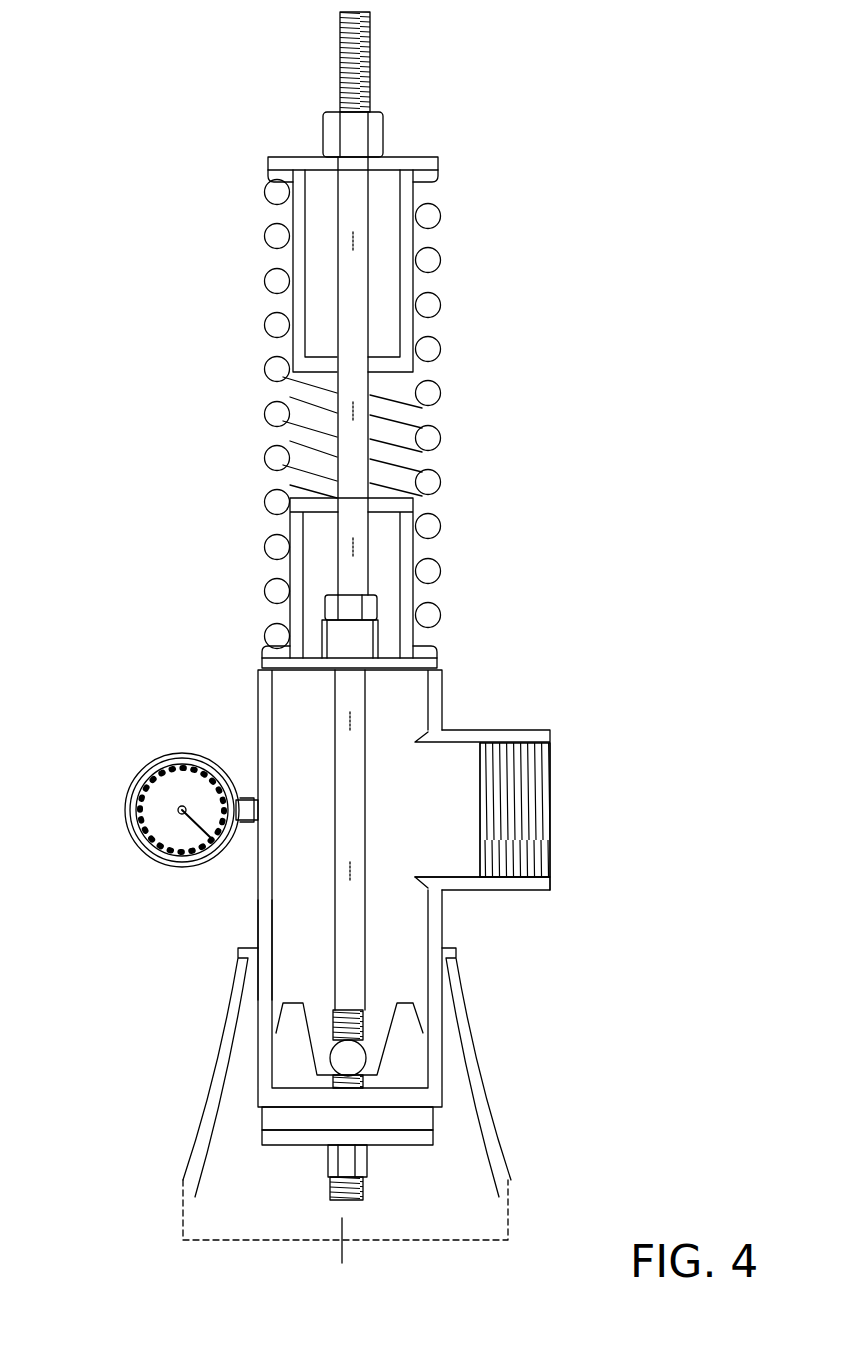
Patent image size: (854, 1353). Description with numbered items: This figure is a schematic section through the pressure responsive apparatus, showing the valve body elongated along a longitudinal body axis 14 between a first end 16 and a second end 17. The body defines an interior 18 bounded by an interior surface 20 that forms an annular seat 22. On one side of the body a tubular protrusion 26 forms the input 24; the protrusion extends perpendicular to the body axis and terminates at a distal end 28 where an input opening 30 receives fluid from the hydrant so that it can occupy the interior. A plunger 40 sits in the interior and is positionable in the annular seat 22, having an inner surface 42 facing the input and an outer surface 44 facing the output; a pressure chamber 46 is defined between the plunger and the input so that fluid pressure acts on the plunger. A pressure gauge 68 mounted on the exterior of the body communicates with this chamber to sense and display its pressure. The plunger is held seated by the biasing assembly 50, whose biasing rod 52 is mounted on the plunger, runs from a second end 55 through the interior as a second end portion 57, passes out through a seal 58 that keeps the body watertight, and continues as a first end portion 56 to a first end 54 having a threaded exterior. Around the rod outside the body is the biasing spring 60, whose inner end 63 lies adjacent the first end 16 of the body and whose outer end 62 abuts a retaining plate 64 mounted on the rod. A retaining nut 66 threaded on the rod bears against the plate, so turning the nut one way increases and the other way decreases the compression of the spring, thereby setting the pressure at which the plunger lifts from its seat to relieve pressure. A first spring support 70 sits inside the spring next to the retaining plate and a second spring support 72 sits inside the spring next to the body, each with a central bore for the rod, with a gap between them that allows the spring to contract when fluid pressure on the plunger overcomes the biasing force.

The first end 54 is at (368, 15).
The retaining nut 66 is at (323, 132).
The retaining plate 64 is at (400, 160).
The outer end 62 is at (440, 173).
The first spring support 70 is at (407, 243).
The first end portion 56 is at (350, 308).
The biasing spring 60 is at (267, 458).
The second spring support 72 is at (403, 552).
The seal 58 is at (378, 623).
The inner end 63 is at (425, 650).
The biasing assembly 50 is at (478, 396).
The first end 16 is at (262, 672).
The tubular protrusion 26 is at (470, 732).
The input 24 is at (570, 783).
The input opening 30 is at (545, 820).
The distal end 28 is at (552, 845).
The biasing rod 52 is at (347, 758).
The pressure gauge 68 is at (128, 815).
The interior 18 is at (290, 918).
The interior surface 20 is at (268, 940).
The pressure chamber 46 is at (398, 934).
The second end portion 57 is at (347, 988).
The inner surface 42 is at (377, 1092).
The annular seat 22 is at (437, 1115).
The outer surface 44 is at (287, 1147).
The second end 55 is at (323, 1190).
The plunger 40 is at (270, 1122).
The second end 17 is at (510, 1233).
The longitudinal body axis 14 is at (345, 1252).